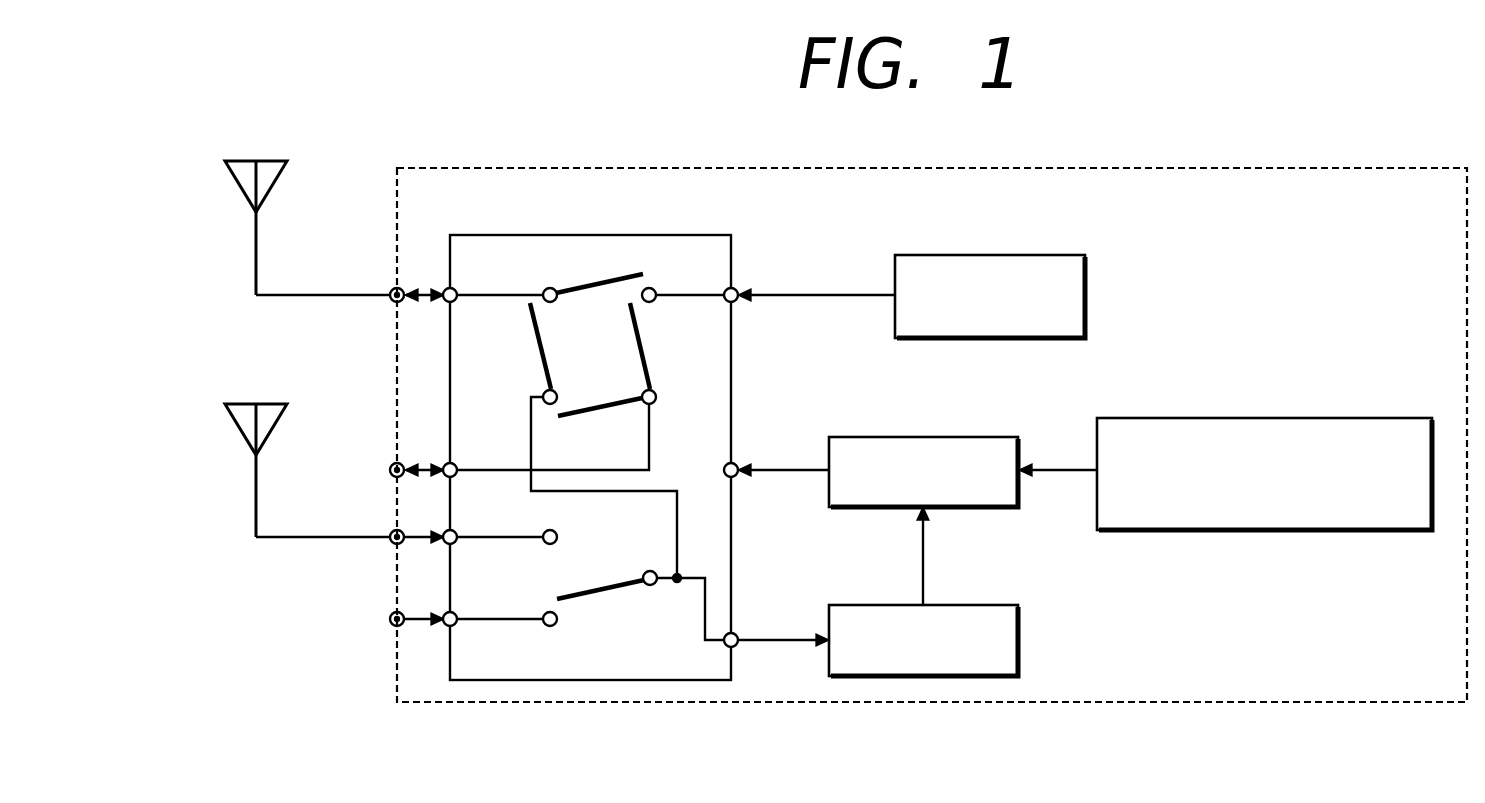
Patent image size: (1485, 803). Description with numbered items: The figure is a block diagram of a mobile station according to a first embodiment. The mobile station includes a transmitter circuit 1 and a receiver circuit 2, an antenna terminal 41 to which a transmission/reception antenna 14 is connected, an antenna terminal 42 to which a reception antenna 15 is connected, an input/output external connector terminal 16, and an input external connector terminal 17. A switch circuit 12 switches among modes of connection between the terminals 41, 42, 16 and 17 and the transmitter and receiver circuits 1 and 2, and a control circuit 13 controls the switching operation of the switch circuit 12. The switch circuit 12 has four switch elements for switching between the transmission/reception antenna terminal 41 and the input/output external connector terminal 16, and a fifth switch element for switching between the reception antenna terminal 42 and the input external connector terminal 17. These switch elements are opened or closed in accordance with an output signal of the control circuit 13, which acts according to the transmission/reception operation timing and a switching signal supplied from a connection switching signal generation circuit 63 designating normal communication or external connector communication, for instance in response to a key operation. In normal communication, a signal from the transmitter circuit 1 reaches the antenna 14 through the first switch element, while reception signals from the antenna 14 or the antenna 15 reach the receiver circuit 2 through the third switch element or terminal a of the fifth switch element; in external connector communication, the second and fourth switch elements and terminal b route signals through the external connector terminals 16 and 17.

The transmitter circuit 1 is at (1088, 277).
The receiver circuit 2 is at (1020, 620).
The switch circuit 12 is at (687, 233).
The control circuit 13 is at (1020, 442).
The transmission/reception antenna 14 is at (241, 190).
The reception antenna 15 is at (241, 433).
The input/output external connector terminal 16 is at (393, 478).
The input external connector terminal 17 is at (393, 627).
The antenna terminal 41 is at (393, 303).
The antenna terminal 42 is at (393, 545).
The connection switching signal generation circuit 63 is at (1396, 418).